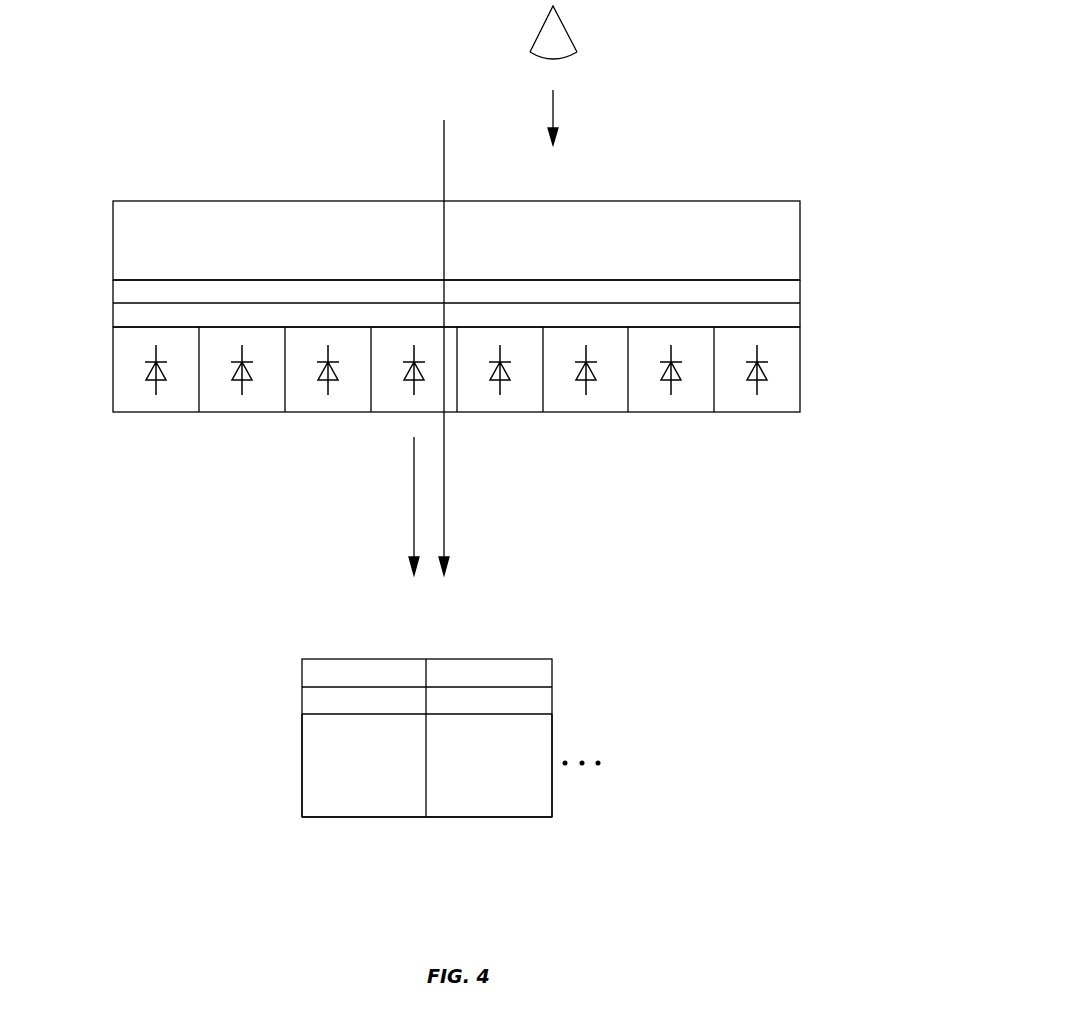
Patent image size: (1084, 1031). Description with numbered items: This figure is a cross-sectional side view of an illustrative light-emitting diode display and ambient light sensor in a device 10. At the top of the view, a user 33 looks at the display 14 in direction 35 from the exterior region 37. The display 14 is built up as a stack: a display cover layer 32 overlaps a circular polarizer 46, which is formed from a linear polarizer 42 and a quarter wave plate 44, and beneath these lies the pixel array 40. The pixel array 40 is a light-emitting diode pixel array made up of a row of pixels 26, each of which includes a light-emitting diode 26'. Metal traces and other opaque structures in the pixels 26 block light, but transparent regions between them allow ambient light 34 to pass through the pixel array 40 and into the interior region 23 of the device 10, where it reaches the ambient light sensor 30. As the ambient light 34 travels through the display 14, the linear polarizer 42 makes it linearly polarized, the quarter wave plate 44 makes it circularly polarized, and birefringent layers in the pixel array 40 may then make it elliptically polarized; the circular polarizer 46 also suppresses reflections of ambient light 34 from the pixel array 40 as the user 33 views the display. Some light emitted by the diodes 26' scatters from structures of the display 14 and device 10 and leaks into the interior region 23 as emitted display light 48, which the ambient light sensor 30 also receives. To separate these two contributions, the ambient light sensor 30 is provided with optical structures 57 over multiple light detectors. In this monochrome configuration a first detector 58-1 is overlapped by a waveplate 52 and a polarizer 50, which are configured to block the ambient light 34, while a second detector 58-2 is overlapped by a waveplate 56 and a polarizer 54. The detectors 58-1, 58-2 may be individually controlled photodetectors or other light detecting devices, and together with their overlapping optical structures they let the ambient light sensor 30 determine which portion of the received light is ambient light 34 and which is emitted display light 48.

The device 10 is at (892, 191).
The display 14 is at (731, 165).
The interior region 23 is at (708, 509).
The pixels 26 is at (462, 401).
The light-emitting diode 26' is at (111, 370).
The ambient light sensor 30 is at (552, 836).
The display cover layer 32 is at (800, 232).
The user 33 is at (567, 30).
The ambient light 34 is at (446, 495).
The direction 35 is at (553, 105).
The exterior region 37 is at (157, 165).
The pixel array 40 is at (817, 327).
The linear polarizer 42 is at (122, 292).
The quarter wave plate 44 is at (122, 315).
The circular polarizer 46 is at (817, 280).
The emitted display light 48 is at (412, 495).
The polarizer 50 is at (310, 701).
The waveplate 52 is at (310, 674).
The polarizer 54 is at (543, 701).
The waveplate 56 is at (543, 674).
The optical structures 57 is at (318, 631).
The first detector 58-1 is at (310, 783).
The second detector 58-2 is at (543, 789).